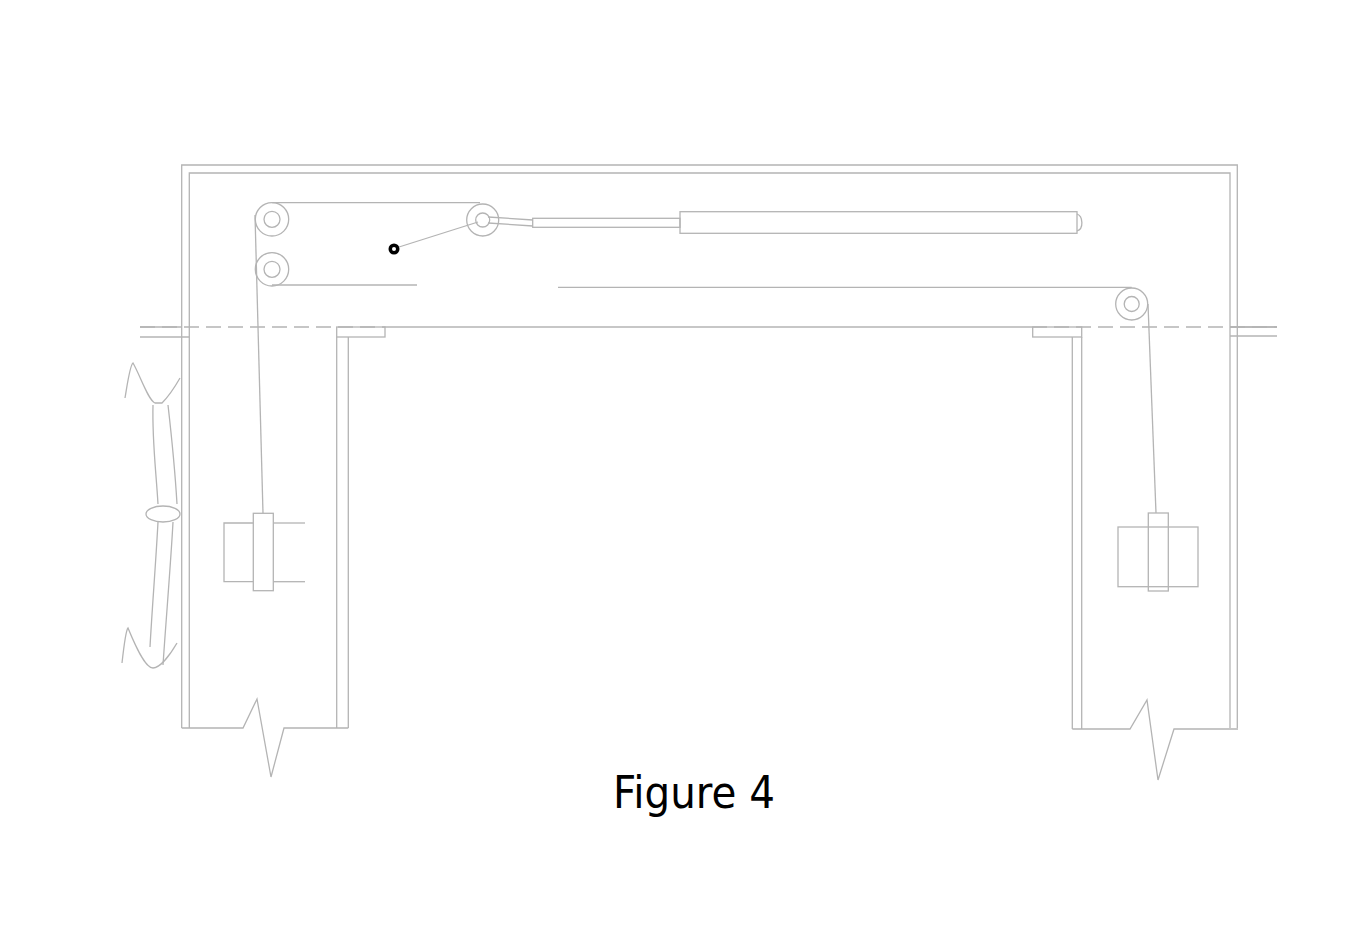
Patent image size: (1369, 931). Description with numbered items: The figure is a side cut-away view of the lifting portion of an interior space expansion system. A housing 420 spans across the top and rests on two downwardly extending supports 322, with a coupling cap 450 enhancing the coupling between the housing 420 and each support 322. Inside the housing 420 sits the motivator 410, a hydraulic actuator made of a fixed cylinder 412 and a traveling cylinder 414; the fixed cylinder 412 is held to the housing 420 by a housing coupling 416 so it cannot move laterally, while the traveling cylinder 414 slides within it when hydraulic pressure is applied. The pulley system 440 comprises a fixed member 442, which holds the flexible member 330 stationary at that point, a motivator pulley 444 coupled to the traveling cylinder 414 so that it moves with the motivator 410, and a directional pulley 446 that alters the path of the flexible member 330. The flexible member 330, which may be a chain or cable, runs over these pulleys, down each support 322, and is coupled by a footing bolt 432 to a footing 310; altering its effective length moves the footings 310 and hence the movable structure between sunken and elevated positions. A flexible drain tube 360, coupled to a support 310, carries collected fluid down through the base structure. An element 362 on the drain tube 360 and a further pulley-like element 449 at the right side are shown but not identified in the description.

The footing 310 is at (711, 534).
The support 322 is at (710, 553).
The flexible member 330 is at (705, 364).
The drain tube 360 is at (115, 515).
The connector 362 is at (106, 483).
The motivator 410 is at (802, 145).
The fixed cylinder 412 is at (878, 146).
The traveling cylinder 414 is at (606, 143).
The housing coupling 416 is at (1094, 145).
The housing 420 is at (708, 389).
The footing bolt 432 is at (710, 516).
The pulley system 440 is at (301, 229).
The fixed member 442 is at (436, 310).
The motivator pulley 444 is at (500, 160).
The directional pulley 446 is at (280, 185).
The pulley 449 is at (1209, 270).
The coupling cap 450 is at (1299, 290).